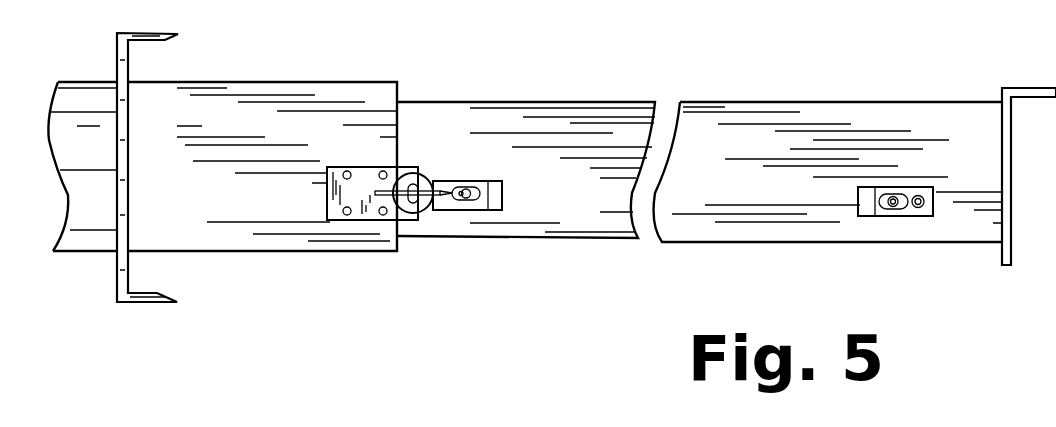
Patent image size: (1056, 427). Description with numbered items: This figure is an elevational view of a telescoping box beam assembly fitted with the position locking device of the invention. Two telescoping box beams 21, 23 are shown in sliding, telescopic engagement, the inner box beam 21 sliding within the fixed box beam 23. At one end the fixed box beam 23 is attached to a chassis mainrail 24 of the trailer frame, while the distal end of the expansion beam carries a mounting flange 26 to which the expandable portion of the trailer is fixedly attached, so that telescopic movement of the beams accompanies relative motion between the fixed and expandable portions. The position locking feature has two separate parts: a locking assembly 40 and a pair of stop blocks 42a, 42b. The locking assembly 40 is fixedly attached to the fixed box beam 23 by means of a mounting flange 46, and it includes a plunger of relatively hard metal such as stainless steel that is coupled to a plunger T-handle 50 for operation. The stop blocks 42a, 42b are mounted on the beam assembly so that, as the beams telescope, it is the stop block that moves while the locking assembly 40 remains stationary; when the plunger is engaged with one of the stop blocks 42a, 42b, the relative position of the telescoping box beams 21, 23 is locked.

The telescoping box beam 21 is at (583, 102).
The fixed box beam 23 is at (338, 83).
The chassis mainrail 24 is at (152, 33).
The mounting flange 26 is at (1055, 88).
The locking assembly 40 is at (420, 212).
The stop block 42a is at (470, 210).
The stop block 42b is at (896, 216).
The mounting flange 46 is at (357, 220).
The plunger T-handle 50 is at (386, 173).